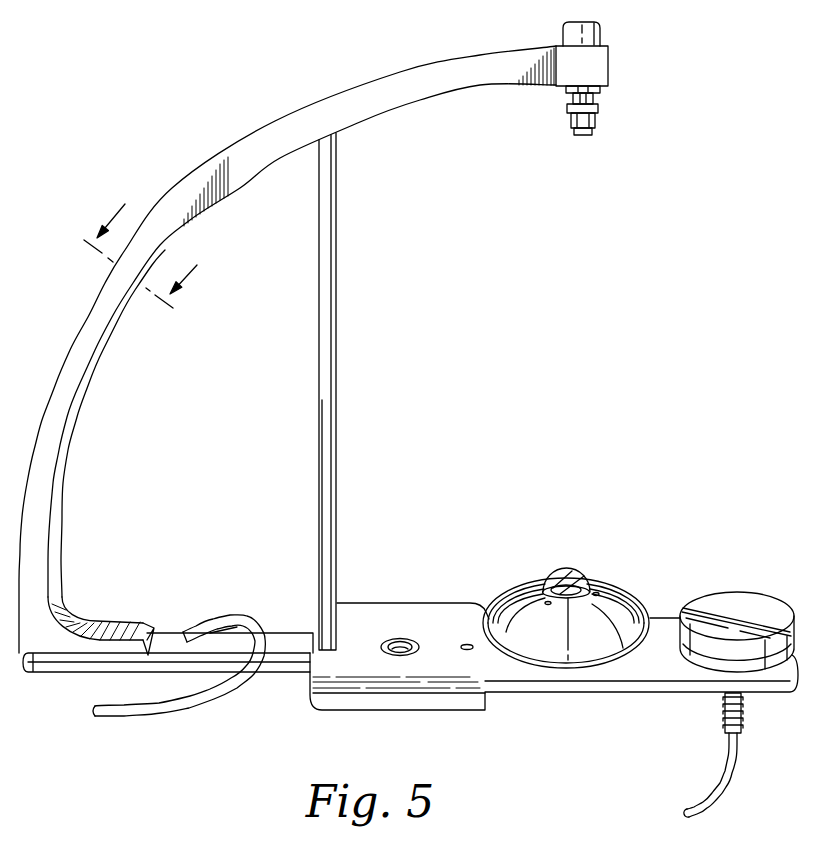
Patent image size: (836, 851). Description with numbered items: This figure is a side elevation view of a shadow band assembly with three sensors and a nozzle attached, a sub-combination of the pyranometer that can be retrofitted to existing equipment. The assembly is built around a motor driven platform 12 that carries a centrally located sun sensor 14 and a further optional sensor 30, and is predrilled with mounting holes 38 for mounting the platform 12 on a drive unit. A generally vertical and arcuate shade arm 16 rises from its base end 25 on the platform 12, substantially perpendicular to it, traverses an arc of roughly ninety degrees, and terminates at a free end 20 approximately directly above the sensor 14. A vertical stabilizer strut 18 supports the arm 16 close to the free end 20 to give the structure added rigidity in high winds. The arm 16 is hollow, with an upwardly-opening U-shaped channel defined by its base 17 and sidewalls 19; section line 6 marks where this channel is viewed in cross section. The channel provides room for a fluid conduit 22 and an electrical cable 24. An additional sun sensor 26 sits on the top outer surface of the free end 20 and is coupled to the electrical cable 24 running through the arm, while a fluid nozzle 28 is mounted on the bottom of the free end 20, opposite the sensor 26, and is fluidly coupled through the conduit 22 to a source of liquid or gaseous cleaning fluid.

The section line 6- 6 is at (148, 245).
The platform 12 is at (377, 612).
The sun sensor 14 is at (567, 567).
The shade arm (shadow band) 16 is at (199, 165).
The base 17 is at (450, 93).
The vertical stabilizer strut 18 is at (327, 430).
The sidewalls 19 is at (395, 93).
The free end 20 is at (614, 70).
The fluid conduit 22 is at (125, 712).
The electrical cable 24 is at (185, 637).
The base end 25 is at (44, 645).
The additional sun sensor 26 is at (602, 33).
The fluid nozzle 28 is at (598, 118).
The sensor 30 is at (719, 620).
The mounting holes 38 is at (400, 656).